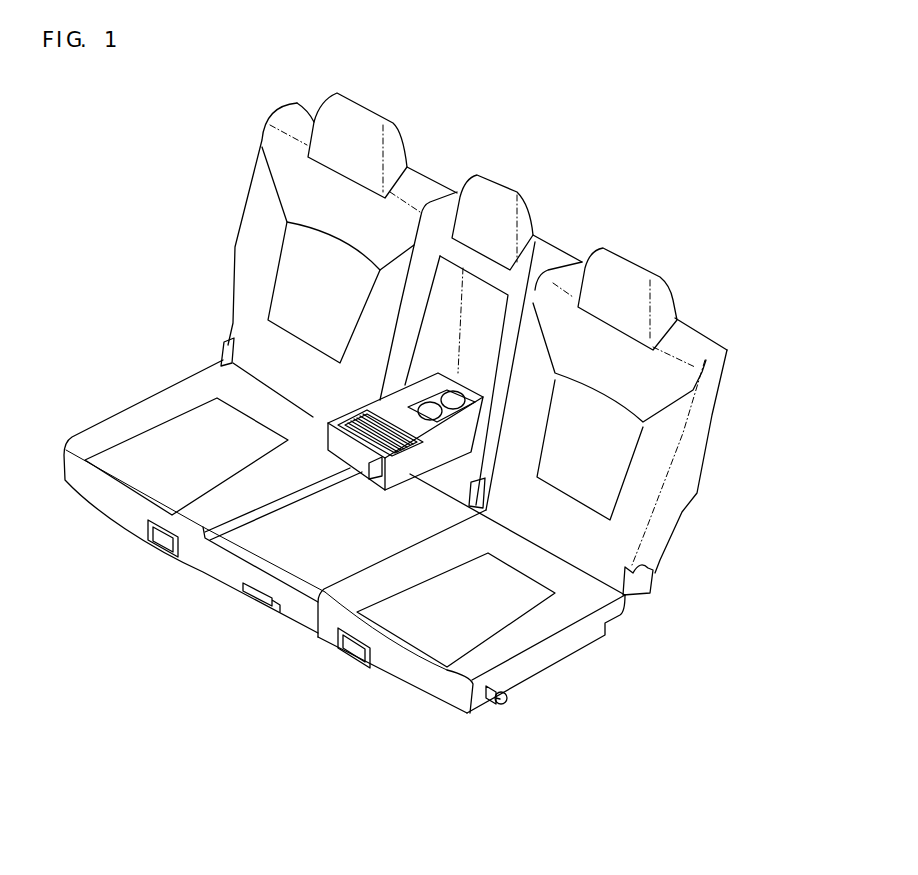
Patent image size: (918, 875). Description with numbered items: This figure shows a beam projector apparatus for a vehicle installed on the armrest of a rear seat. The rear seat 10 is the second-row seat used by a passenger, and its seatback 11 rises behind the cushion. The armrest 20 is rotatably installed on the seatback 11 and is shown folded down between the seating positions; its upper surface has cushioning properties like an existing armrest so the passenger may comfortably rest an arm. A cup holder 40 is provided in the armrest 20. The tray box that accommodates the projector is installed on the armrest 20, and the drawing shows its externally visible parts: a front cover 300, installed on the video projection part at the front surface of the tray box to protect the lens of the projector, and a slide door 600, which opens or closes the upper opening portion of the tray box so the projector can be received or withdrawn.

The rear seat 10 is at (425, 422).
The seatback 11 is at (637, 387).
The armrest 20 is at (405, 467).
The cup holder 40 is at (455, 390).
The front cover 300 is at (348, 445).
The slide door 600 is at (365, 427).